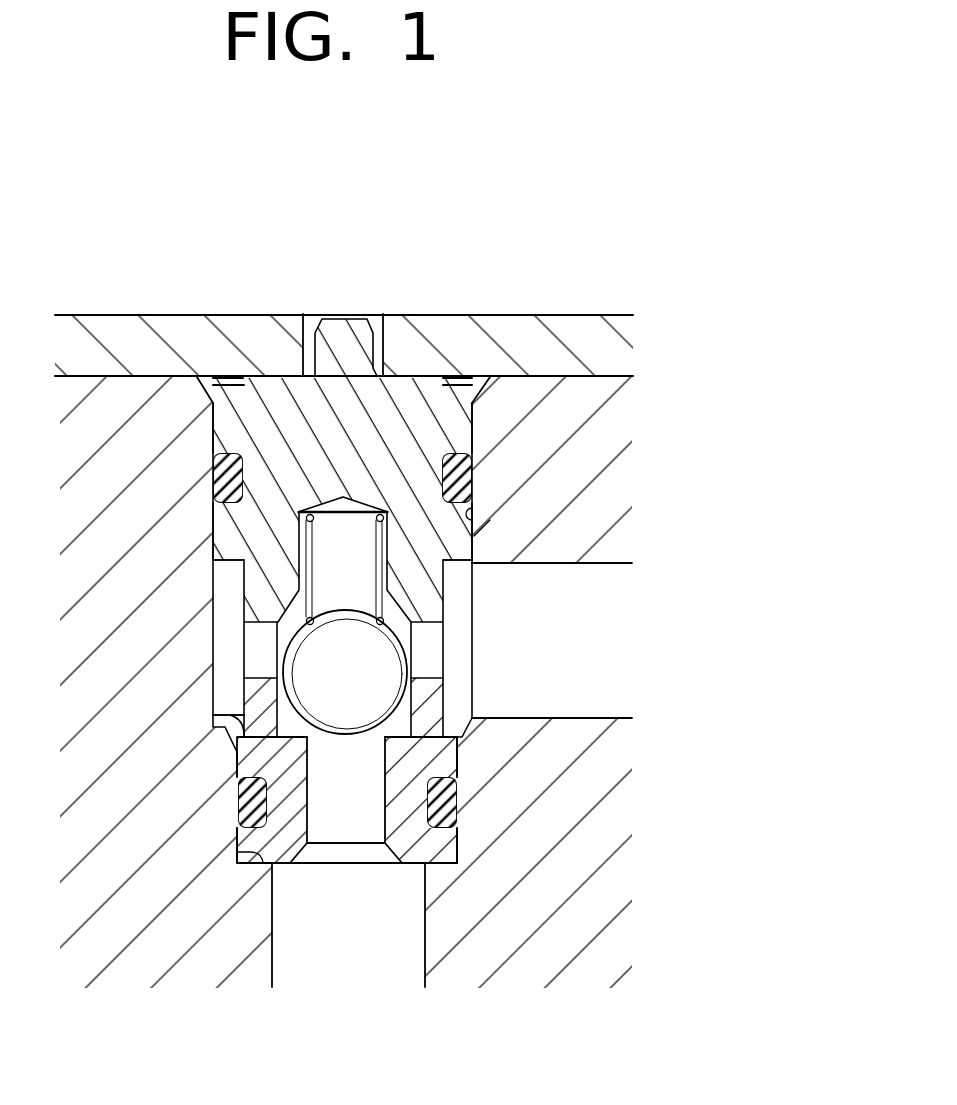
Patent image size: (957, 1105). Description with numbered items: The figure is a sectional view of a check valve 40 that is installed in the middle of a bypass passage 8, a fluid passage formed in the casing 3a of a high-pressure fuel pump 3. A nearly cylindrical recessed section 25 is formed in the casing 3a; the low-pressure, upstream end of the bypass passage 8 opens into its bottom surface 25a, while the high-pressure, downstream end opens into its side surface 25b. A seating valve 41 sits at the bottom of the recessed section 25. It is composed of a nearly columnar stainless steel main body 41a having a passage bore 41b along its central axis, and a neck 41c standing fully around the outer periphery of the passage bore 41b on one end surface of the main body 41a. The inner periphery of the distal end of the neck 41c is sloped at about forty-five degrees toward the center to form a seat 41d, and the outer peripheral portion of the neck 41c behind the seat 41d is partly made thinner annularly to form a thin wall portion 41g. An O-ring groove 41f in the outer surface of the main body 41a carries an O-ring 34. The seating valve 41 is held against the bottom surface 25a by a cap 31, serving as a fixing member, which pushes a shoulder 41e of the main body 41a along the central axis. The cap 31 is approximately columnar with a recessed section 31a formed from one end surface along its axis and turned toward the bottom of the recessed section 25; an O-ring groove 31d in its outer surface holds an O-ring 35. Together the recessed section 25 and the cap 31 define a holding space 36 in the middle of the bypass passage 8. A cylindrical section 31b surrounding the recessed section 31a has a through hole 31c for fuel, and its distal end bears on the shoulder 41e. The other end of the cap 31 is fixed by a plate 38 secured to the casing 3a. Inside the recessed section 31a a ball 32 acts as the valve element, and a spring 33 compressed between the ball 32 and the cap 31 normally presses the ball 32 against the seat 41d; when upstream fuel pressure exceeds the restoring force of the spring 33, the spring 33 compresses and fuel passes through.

The high-pressure fuel pump 3 is at (532, 314).
The casing 3a is at (608, 432).
The bypass passage 8 is at (603, 693).
The recessed section 25 is at (220, 425).
The bottom surface 25a is at (237, 857).
The side surface 25b is at (474, 512).
The cap 31 is at (237, 530).
The recessed section of cap 31a is at (474, 537).
The cylindrical section 31b is at (447, 584).
The through hole 31c is at (428, 627).
The O-ring groove 31d is at (474, 470).
The ball 32 is at (343, 609).
The spring 33 is at (318, 516).
The O-ring 34 is at (462, 805).
The O-ring 35 is at (474, 482).
The holding space 36 is at (225, 640).
The plate 38 is at (412, 314).
The check valve 40 is at (323, 314).
The seating valve 41 is at (413, 866).
The main body 41a is at (460, 847).
The passage bore 41b is at (370, 828).
The neck 41c is at (246, 700).
The seat 41d is at (292, 712).
The shoulder 41e is at (236, 722).
The O-ring groove 41f is at (462, 788).
The right flange 41g is at (448, 736).